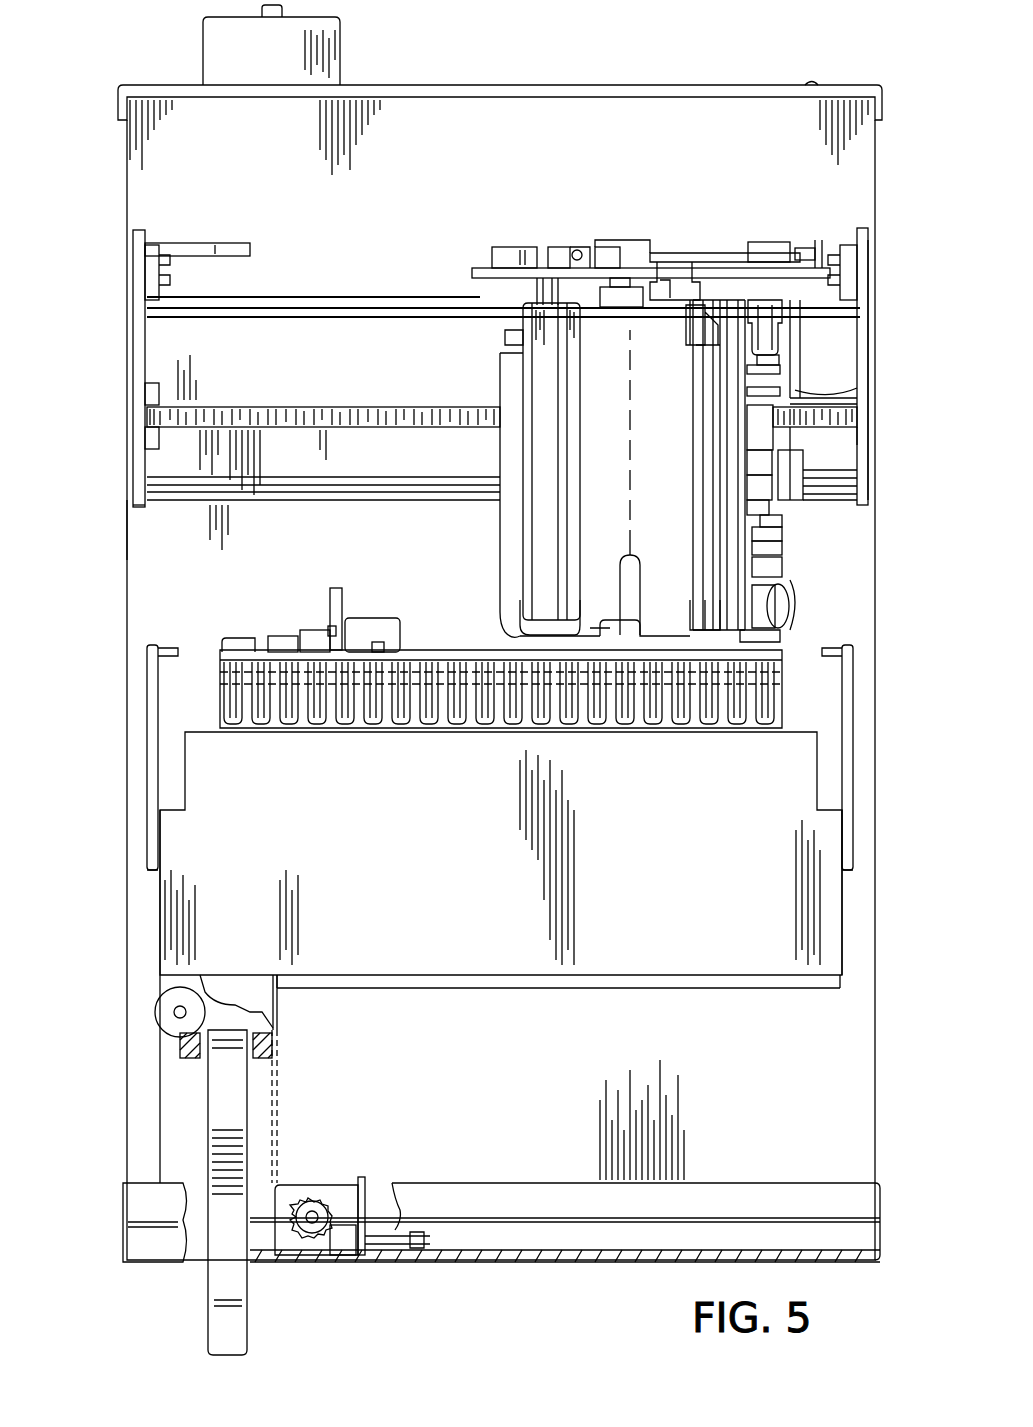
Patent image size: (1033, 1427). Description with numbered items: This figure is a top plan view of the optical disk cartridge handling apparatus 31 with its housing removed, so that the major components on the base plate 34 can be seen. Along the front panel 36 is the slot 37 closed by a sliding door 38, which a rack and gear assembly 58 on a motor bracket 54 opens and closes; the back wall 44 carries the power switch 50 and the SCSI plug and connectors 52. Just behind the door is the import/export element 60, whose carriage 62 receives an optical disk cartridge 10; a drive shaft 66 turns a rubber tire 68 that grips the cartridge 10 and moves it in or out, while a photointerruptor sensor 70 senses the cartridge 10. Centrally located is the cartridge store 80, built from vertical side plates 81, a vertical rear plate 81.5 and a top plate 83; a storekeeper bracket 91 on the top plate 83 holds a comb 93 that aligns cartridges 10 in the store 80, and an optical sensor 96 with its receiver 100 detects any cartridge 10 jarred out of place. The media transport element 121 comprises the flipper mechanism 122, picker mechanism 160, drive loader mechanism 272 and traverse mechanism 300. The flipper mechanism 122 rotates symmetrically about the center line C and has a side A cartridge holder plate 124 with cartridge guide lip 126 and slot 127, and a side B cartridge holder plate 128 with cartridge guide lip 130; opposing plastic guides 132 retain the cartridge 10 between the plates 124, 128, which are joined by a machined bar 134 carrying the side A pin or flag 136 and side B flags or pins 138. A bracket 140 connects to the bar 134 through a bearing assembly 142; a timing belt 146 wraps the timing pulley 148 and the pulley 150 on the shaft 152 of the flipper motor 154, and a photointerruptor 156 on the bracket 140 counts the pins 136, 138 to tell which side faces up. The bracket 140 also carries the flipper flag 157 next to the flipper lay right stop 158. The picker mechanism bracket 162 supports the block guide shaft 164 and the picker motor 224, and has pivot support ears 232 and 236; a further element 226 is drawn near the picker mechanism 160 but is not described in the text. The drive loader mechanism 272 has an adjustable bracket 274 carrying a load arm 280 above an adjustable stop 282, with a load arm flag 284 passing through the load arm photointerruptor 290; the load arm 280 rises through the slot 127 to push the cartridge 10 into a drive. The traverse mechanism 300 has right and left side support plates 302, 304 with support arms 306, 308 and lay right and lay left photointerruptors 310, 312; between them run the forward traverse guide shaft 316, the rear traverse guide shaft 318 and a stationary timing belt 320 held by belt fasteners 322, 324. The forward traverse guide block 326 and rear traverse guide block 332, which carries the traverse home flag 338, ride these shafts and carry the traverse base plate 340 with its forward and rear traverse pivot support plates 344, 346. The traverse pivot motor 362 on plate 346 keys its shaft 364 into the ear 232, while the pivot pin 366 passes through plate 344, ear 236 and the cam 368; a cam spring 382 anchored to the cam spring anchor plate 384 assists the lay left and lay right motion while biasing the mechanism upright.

The optical disk cartridge 10 is at (545, 447).
The optical disk cartridge handling apparatus 31 is at (118, 552).
The base plate 34 is at (105, 492).
The front panel 36 is at (564, 1252).
The slot 37 is at (210, 1275).
The sliding door 38 is at (290, 1262).
The back wall 44 is at (560, 84).
The power switch 50 is at (812, 83).
The SCSI plug and connectors 52 is at (210, 62).
The motor bracket 54 is at (345, 1188).
The rack and gear assembly 58 is at (318, 1200).
The import/export element 60 is at (190, 1136).
The carriage 62 is at (205, 1090).
The drive shaft 66 is at (173, 1015).
The rubber tire 68 is at (165, 992).
The photointerruptor sensor 70 is at (180, 1048).
The cartridge store 80 is at (870, 866).
The vertical side plates 81 is at (162, 922).
The vertical rear plate 81.5 is at (746, 984).
The top plate 83 is at (501, 860).
The storekeeper bracket 91 is at (322, 730).
The comb 93 is at (262, 728).
The optical sensor 96 is at (168, 645).
The receiver 100 is at (850, 640).
The media transport element 121 is at (886, 312).
The flipper mechanism 122 is at (545, 372).
The side A cartridge holder plate 124 is at (665, 465).
The cartridge guide lip 126 is at (600, 636).
The slot 127 is at (628, 560).
The side B cartridge holder plate 128 is at (503, 612).
The cartridge guide lip 130 is at (505, 634).
The plastic guides 132 is at (512, 548).
The machined bar 134 is at (522, 300).
The side A pin or flag 136 is at (690, 318).
The side B flags or pins 138 is at (530, 282).
The bracket 140 is at (568, 270).
The bearing assembly 142 is at (620, 278).
The timing belt 146 is at (722, 250).
The timing pulley 148 is at (645, 240).
The pulley 150 is at (775, 240).
The shaft 152 is at (792, 250).
The flipper motor 154 is at (782, 352).
The photointerruptor 156 is at (672, 262).
The flipper flag 157 is at (478, 268).
The flipper lay right stop 158 is at (580, 250).
The picker mechanism 160 is at (700, 352).
The picker mechanism bracket 162 is at (780, 596).
The block guide shaft 164 is at (702, 608).
The picker motor 224 is at (782, 628).
The stop 226 is at (240, 642).
The picker bracket pivot support ear 232 is at (747, 374).
The picker bracket pivot support ear 236 is at (744, 510).
The drive loader mechanism 272 is at (322, 625).
The adjustable bracket 274 is at (318, 638).
The load arm 280 is at (335, 600).
The adjustable stop 282 is at (330, 626).
The load arm flag 284 is at (375, 620).
The load arm photointerruptor 290 is at (384, 640).
The traverse mechanism 300 is at (848, 392).
The right side support plate 302 is at (862, 476).
The left side support plate 304 is at (144, 438).
The right flipper mechanism support arm 306 is at (862, 243).
The left flipper mechanism support arm 308 is at (250, 240).
The traverse lay right photointerruptor 310 is at (858, 252).
The traverse lay left photointerruptor 312 is at (150, 262).
The forward traverse guide shaft 316 is at (850, 490).
The rear traverse guide shaft 318 is at (306, 297).
The stationary timing belt 320 is at (322, 407).
The right plate belt fastener 322 is at (858, 428).
The left plate belt fastener 324 is at (144, 392).
The forward traverse guide block 326 is at (782, 520).
The rear traverse guide block 332 is at (785, 334).
The traverse home flag 338 is at (818, 242).
The traverse base plate 340 is at (816, 452).
The forward traverse pivot support plate 344 is at (778, 572).
The rear traverse pivot support plate 346 is at (862, 384).
The traverse pivot motor 362 is at (750, 430).
The shaft 364 is at (782, 376).
The pivot pin 366 is at (772, 550).
The cam 368 is at (744, 486).
The cam spring 382 is at (765, 530).
The cam spring anchor plate 384 is at (748, 462).
The center line C is at (625, 470).